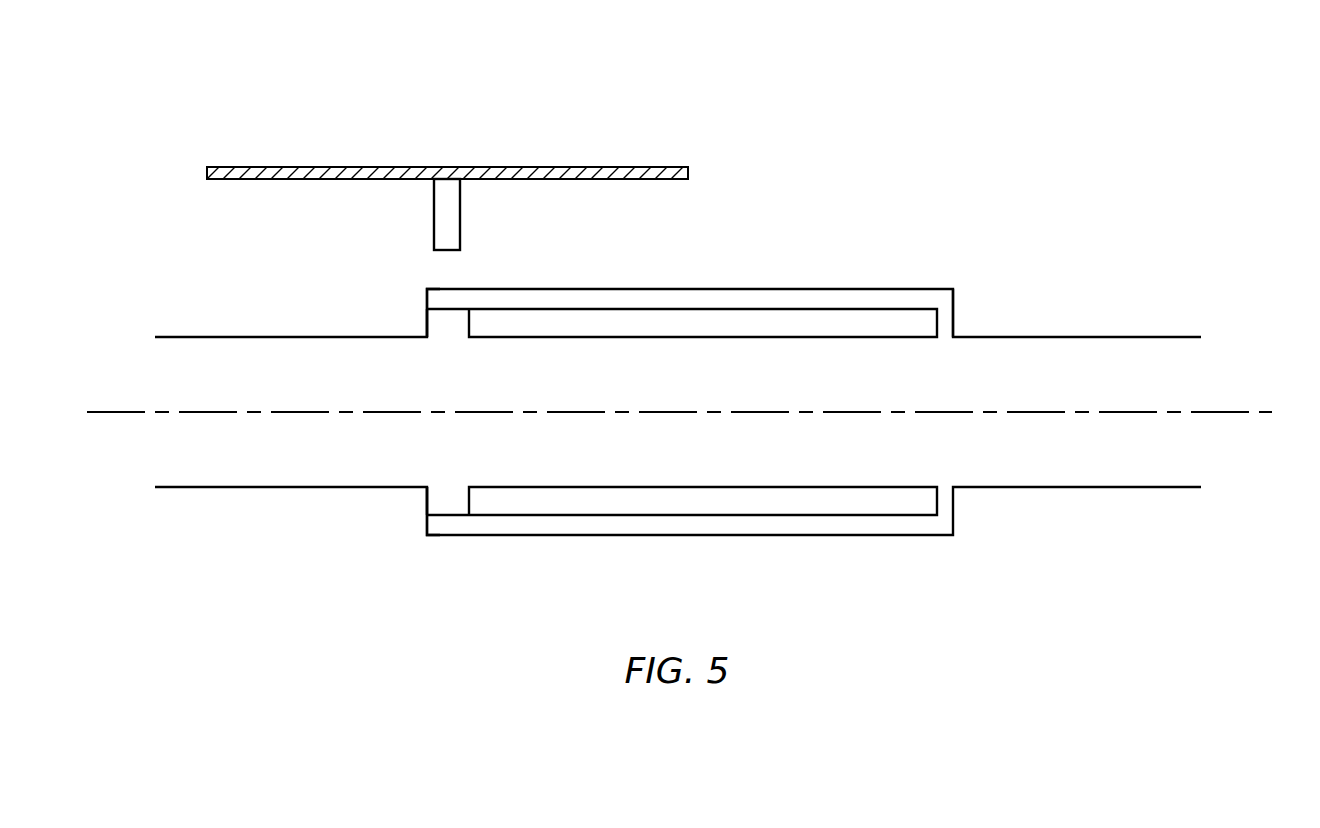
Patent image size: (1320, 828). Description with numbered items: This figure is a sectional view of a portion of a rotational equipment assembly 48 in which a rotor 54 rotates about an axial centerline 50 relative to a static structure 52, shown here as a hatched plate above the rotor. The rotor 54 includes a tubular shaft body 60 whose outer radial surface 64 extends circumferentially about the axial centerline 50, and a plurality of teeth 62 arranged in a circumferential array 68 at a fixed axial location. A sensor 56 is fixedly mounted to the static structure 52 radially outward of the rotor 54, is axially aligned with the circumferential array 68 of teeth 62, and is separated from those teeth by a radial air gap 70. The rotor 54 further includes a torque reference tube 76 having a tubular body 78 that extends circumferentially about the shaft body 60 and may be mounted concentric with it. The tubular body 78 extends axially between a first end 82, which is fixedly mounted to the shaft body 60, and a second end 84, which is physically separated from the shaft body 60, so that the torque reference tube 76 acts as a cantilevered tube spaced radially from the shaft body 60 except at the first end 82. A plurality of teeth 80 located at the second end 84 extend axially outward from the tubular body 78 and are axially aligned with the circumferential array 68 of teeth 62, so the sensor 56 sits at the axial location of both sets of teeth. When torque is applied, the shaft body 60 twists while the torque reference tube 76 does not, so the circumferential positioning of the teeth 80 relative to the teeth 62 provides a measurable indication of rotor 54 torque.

The fastening assembly 48 is at (1088, 128).
The axial centerline 50 is at (1262, 415).
The static structure 52 is at (640, 167).
The rotor 54 is at (1128, 291).
The sensor 56 is at (453, 200).
The tubular shaft body 60 is at (1054, 350).
The teeth 62 is at (437, 319).
The outer radial surface 64 is at (1035, 488).
The circumferential array 68 is at (418, 286).
The gap 70 is at (453, 270).
The torque reference tube 76 is at (848, 258).
The tubular body 78 is at (760, 297).
The teeth 80 is at (455, 543).
The first end 82 is at (955, 323).
The second end 84 is at (497, 537).